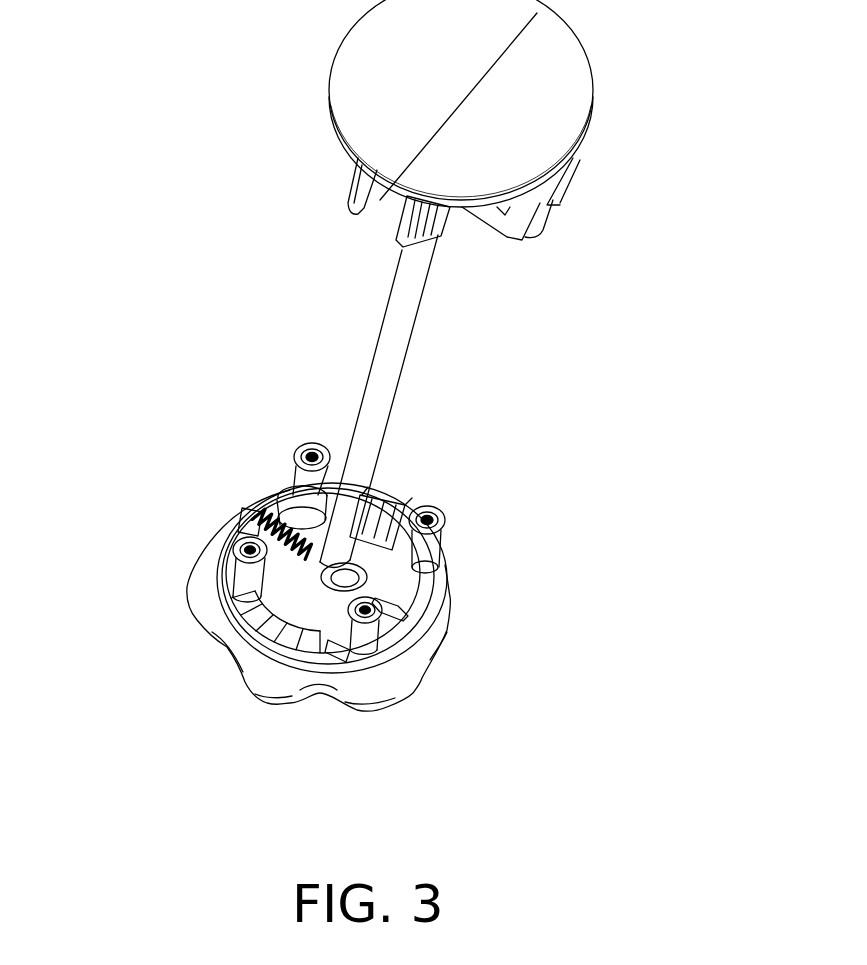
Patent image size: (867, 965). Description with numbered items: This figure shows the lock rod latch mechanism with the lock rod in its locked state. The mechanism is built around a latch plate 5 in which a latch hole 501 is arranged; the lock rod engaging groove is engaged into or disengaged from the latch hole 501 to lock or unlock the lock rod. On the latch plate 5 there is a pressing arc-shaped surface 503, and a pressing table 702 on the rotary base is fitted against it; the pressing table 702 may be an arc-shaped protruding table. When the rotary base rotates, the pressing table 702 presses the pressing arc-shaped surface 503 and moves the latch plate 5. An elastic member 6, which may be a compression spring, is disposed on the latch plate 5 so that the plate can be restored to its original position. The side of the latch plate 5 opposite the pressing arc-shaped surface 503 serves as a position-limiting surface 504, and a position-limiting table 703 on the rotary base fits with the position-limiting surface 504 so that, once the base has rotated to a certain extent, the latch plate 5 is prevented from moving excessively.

The latch plate 5 is at (313, 588).
The elastic member 6 is at (247, 507).
The latch hole 501 is at (392, 508).
The pressing arc-shaped surface 503 is at (449, 586).
The position-limiting surface 504 is at (387, 625).
The pressing table 702 is at (443, 562).
The position-limiting table 703 is at (341, 645).